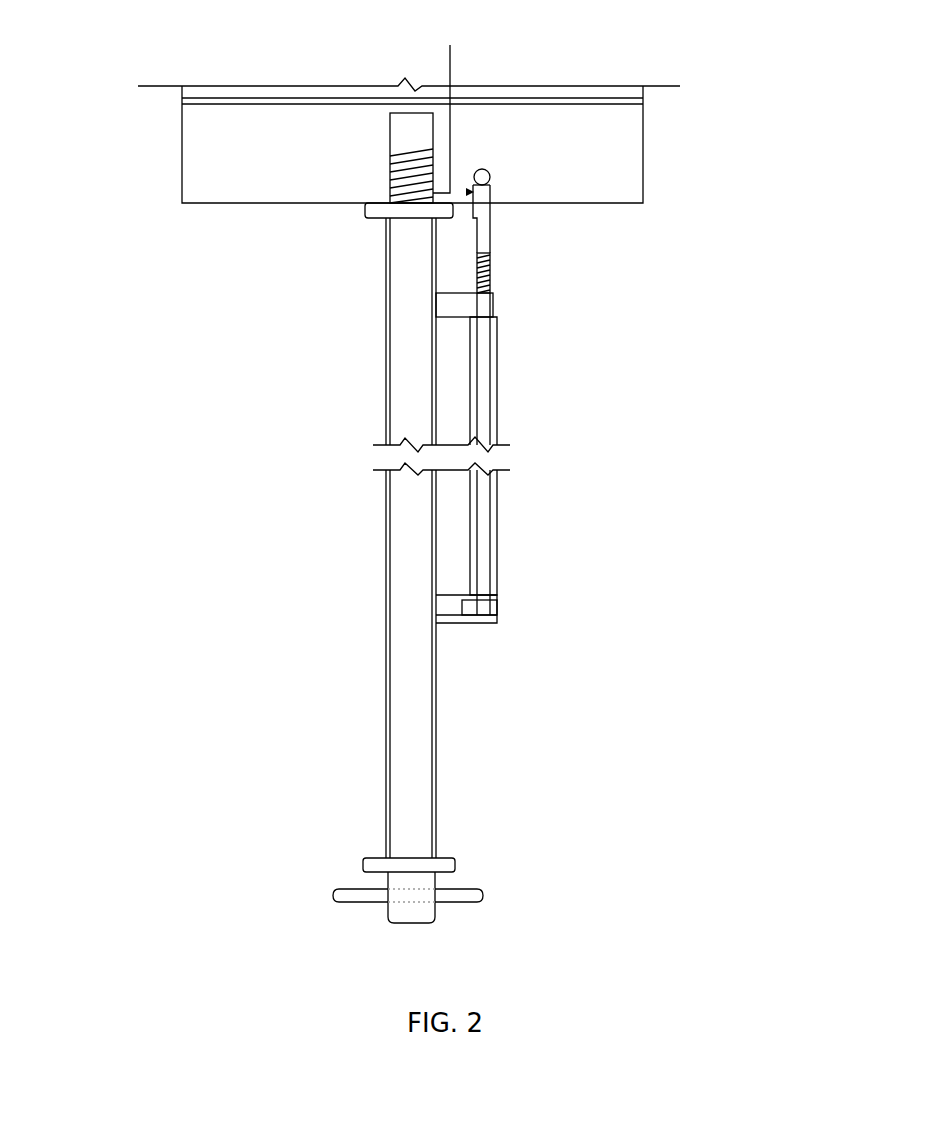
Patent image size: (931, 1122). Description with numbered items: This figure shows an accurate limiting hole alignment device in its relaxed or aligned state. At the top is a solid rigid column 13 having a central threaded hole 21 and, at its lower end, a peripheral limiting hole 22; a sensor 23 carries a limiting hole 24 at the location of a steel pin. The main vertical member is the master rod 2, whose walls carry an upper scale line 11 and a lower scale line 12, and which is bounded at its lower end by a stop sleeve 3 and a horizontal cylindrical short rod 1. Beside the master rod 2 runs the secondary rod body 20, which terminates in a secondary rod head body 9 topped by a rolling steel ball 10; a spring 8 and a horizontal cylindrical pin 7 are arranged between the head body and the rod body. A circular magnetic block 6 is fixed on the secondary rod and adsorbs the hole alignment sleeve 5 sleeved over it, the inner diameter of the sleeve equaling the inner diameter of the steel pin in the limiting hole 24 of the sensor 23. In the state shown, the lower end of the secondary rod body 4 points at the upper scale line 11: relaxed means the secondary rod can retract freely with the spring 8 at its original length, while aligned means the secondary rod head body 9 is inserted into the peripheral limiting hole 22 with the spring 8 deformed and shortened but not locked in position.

The horizontal cylindrical short rod 1 is at (530, 920).
The master rod 2 is at (544, 563).
The stop sleeve 3 is at (350, 538).
The lower end of secondary rod body 4 is at (578, 630).
The hole alignment sleeve 5 is at (599, 454).
The circular magnetic block 6 is at (591, 594).
The horizontal cylindrical pin 7 is at (620, 347).
The spring 8 is at (641, 299).
The secondary rod head body 9 is at (639, 243).
The rolling steel ball 10 is at (646, 190).
The upper scale line 11 is at (306, 538).
The lower scale line 12 is at (590, 538).
The solid rigid column 13 is at (500, 144).
The secondary rod body 20 is at (541, 456).
The central threaded hole 21 is at (238, 158).
The peripheral limiting hole 22 is at (642, 221).
The sensor 23 is at (446, 96).
The limiting hole 24 is at (478, 72).